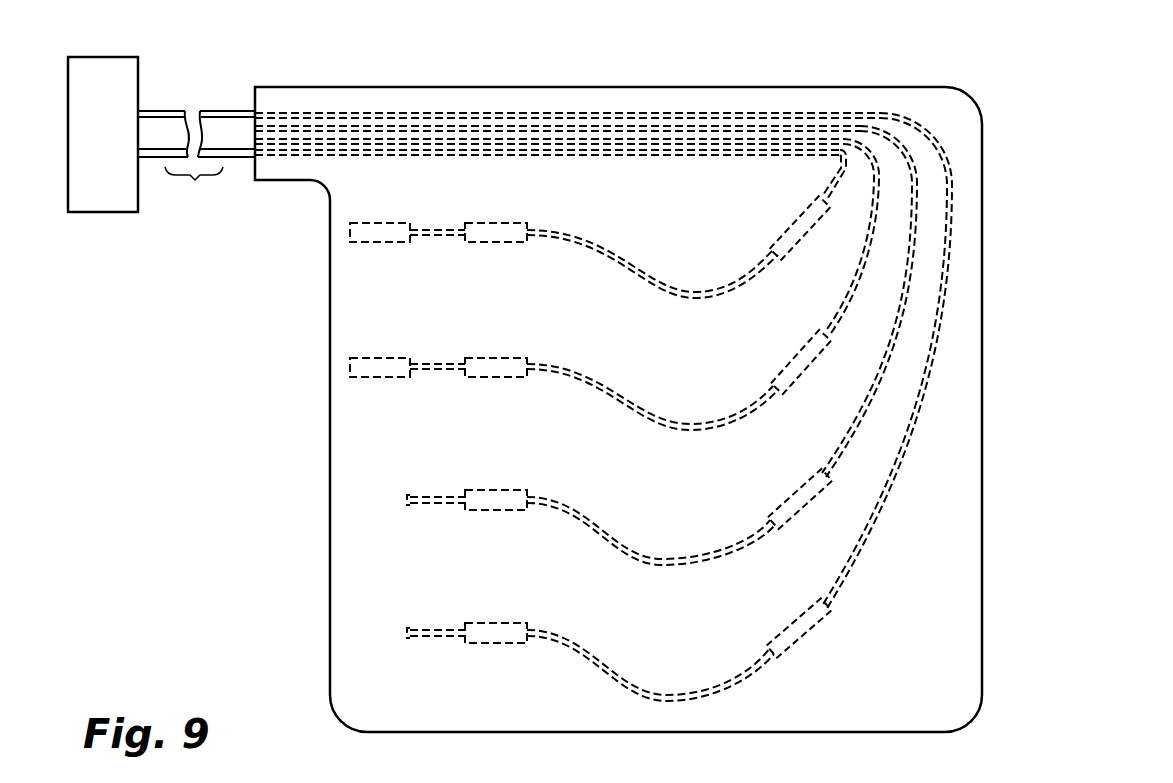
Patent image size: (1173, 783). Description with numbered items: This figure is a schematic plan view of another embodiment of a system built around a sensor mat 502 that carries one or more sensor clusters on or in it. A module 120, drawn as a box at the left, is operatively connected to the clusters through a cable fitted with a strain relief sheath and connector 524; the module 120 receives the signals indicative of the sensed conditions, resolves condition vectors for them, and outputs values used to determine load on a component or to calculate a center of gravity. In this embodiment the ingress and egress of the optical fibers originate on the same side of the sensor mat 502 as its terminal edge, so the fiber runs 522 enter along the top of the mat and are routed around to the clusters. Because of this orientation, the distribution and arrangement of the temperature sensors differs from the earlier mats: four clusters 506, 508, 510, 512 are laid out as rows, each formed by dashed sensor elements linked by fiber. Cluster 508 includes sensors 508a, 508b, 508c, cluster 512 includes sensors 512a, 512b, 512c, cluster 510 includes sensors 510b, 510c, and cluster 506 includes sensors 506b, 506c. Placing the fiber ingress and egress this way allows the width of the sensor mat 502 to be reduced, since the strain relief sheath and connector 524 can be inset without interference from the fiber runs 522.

The module 120 is at (118, 148).
The sensor mat 502 is at (908, 100).
The sensor string 506 is at (610, 416).
The sensor 506b is at (495, 627).
The sensor 506c is at (793, 626).
The sensor string 508 is at (552, 232).
The sensor 508a is at (382, 226).
The sensor 508b is at (505, 228).
The sensor 508c is at (790, 226).
The sensor string 510 is at (591, 354).
The sensor 510b is at (497, 494).
The sensor 510c is at (794, 492).
The sensor string 512 is at (571, 295).
The sensor 512a is at (382, 360).
The sensor 512b is at (505, 362).
The sensor 512c is at (792, 362).
The conductor bundle 522 is at (328, 130).
The strain relief sheath and connector 524 is at (195, 181).